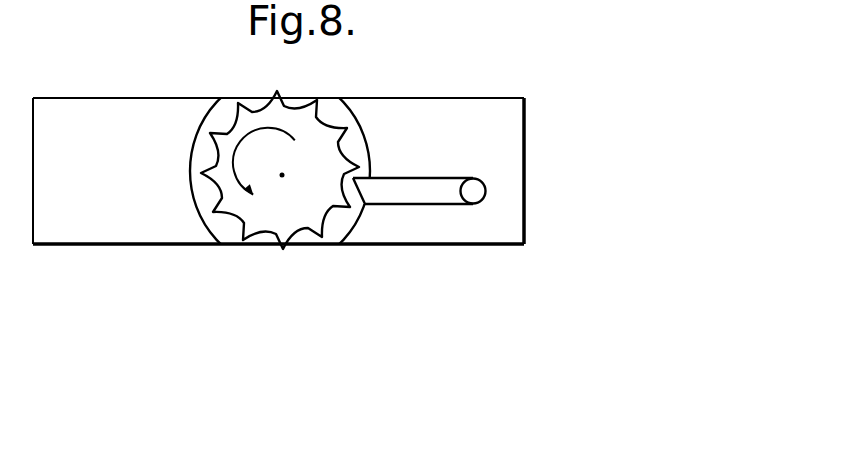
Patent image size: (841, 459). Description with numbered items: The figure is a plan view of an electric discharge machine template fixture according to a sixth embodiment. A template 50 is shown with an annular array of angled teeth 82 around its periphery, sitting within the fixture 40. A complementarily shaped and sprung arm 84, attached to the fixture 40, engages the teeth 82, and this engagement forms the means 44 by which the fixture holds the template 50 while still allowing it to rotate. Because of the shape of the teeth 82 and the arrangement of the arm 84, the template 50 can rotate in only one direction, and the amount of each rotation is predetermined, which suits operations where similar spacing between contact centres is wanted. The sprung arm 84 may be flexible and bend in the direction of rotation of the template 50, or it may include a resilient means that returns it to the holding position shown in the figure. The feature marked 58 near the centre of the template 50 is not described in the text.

The fixture 40 is at (447, 232).
The means to hold a template and allow rotation thereof 44 is at (165, 256).
The template 50 is at (327, 138).
The rotation axis / direction of rotation 58 is at (282, 175).
The angled teeth 82 is at (278, 258).
The sprung arm 84 is at (432, 194).